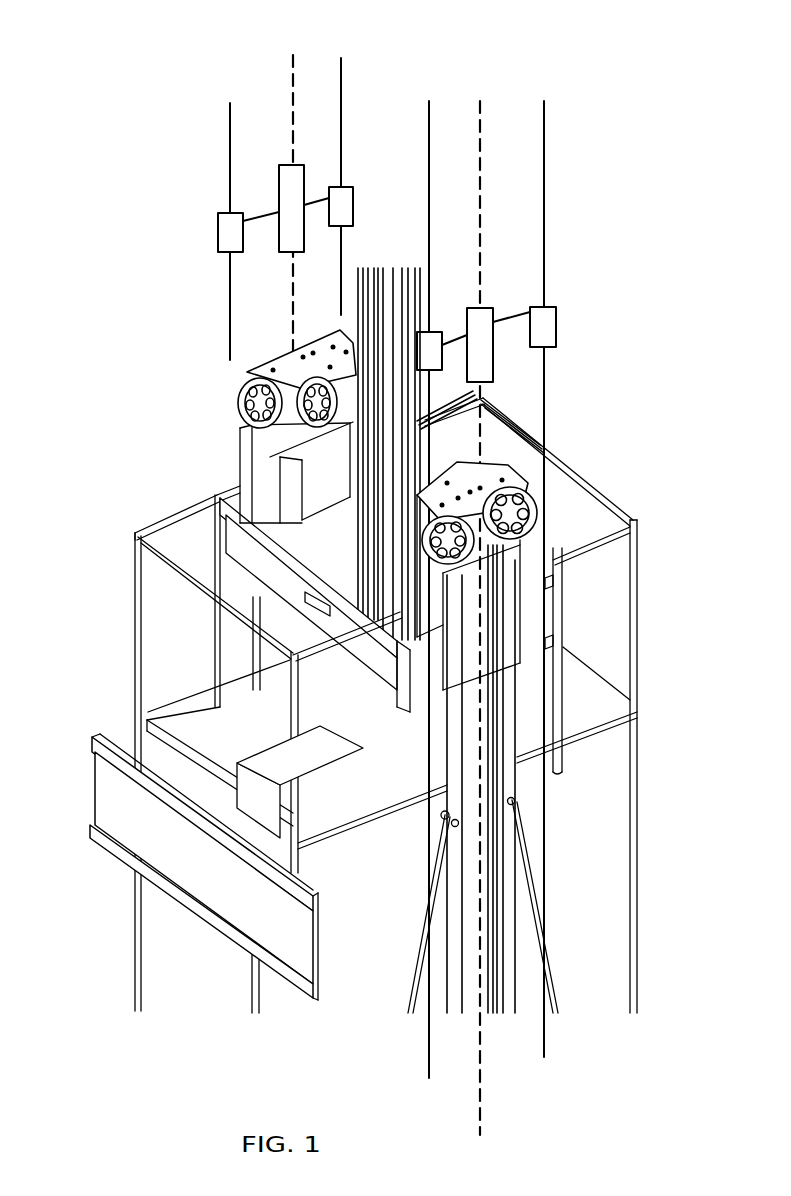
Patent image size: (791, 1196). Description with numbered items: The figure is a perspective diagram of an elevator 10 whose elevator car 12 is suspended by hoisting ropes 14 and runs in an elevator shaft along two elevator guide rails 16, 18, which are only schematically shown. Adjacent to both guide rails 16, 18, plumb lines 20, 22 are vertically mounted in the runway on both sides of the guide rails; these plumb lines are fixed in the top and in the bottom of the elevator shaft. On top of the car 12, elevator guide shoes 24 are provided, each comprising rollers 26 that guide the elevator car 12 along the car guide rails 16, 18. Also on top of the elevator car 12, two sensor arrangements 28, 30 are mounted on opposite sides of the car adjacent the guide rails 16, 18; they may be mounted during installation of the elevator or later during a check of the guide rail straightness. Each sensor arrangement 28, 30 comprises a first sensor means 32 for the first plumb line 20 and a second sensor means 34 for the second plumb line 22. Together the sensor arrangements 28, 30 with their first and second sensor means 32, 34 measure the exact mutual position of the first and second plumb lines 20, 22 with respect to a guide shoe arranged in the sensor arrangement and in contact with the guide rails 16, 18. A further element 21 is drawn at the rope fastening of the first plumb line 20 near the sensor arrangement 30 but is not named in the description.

The elevator 10 is at (118, 269).
The elevator car 12 is at (105, 714).
The hoisting ropes 14 is at (383, 450).
The elevator guide rail 16 is at (291, 88).
The elevator guide rail 18 is at (481, 137).
The first plumb line 20 is at (230, 148).
The rope fastening element 21 is at (433, 330).
The second plumb line 22 is at (341, 88).
The elevator guide shoe 24 is at (250, 370).
The rollers 26 is at (245, 407).
The sensor arrangement 28 is at (250, 272).
The sensor arrangement 30 is at (504, 300).
The first sensor means 32 is at (218, 226).
The second sensor means 34 is at (353, 205).